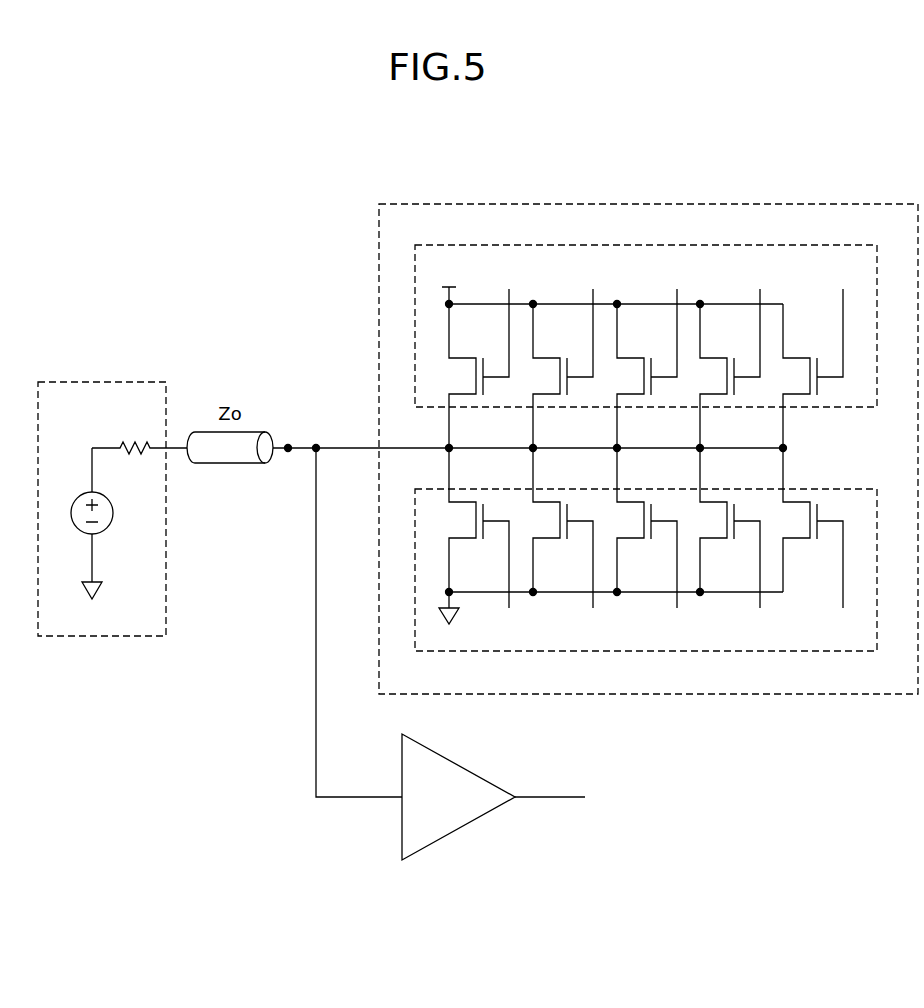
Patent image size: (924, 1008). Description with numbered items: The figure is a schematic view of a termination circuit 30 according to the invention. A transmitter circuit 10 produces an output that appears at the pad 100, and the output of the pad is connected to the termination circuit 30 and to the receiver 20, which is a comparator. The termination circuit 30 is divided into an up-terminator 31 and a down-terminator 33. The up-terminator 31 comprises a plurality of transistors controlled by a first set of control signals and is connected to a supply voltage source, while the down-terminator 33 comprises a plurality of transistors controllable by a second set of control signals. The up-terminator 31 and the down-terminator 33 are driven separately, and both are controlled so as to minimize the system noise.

The transmitter circuit 10 is at (100, 636).
The receiver 20 is at (467, 828).
The termination circuit 30 is at (796, 204).
The up-terminator 31 is at (840, 408).
The down-terminator 33 is at (860, 488).
The pad 100 is at (282, 458).